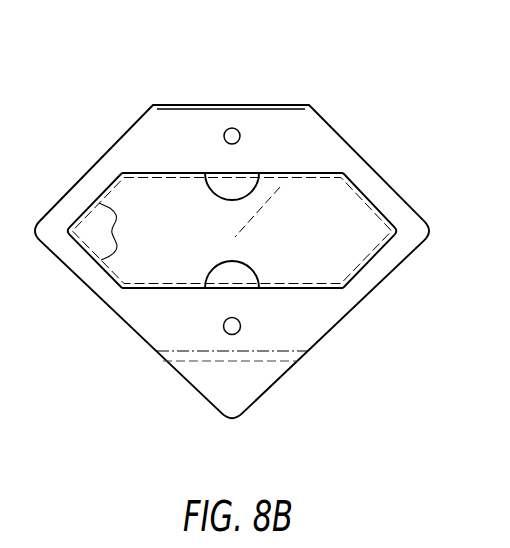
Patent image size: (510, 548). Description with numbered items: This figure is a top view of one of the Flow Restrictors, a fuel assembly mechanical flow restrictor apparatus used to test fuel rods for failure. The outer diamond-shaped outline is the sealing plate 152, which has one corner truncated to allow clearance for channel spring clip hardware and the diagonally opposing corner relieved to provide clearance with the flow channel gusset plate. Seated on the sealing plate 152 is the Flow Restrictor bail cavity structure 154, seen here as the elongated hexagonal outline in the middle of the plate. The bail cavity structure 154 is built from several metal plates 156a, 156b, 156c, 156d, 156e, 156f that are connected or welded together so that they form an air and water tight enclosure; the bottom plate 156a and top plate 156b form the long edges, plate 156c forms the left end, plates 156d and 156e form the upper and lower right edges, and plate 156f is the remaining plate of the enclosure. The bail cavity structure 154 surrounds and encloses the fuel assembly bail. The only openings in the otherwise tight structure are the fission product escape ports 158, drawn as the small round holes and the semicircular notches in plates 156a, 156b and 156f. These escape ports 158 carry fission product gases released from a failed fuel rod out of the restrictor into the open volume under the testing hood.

The sealing plate 152 is at (343, 327).
The Flow Restrictor bail cavity structure 154 is at (286, 178).
The metal plate 156a is at (183, 290).
The metal plate 156b is at (165, 172).
The metal plate 156c is at (102, 195).
The metal plate 156d is at (370, 200).
The metal plate 156e is at (377, 253).
The metal plate 156f is at (340, 252).
The fission product escape ports 158 is at (243, 182).